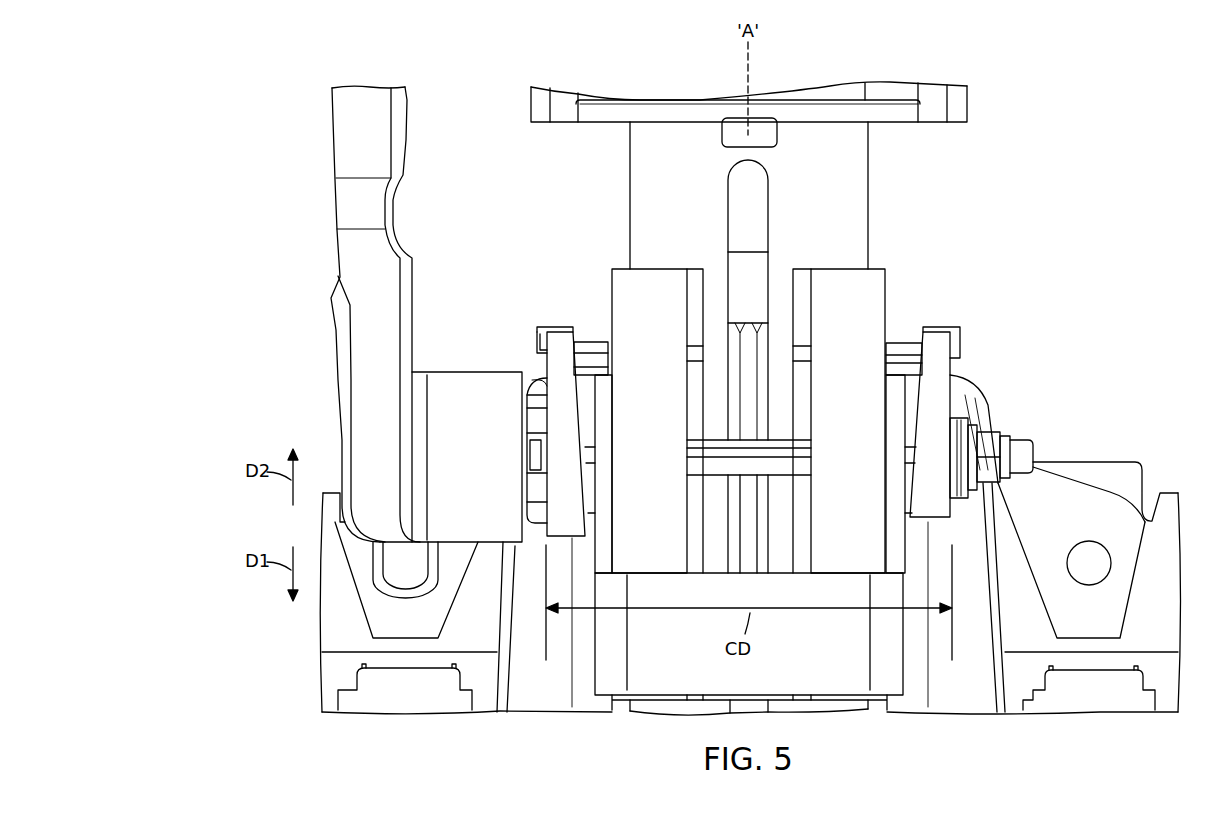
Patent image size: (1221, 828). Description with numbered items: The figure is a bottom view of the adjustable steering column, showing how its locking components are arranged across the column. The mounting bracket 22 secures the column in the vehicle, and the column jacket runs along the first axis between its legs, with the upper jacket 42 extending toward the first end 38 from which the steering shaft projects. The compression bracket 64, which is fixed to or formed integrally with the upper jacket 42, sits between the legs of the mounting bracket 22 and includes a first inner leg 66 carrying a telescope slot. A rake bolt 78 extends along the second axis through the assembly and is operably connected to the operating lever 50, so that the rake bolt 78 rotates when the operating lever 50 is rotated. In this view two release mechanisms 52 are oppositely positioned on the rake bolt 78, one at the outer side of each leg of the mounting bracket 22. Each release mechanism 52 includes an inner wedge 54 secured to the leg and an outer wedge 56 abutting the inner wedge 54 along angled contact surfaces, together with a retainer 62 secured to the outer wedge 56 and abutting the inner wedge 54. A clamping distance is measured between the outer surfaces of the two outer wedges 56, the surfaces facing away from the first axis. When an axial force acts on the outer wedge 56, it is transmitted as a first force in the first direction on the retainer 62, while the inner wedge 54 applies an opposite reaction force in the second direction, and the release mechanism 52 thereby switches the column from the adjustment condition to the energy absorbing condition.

The mounting bracket 22 is at (830, 678).
The first end 38 is at (818, 140).
The upper jacket 42 is at (857, 187).
The operating lever 50 is at (345, 122).
The release mechanism 52 is at (546, 368).
The inner wedge 54 is at (584, 358).
The outer wedge 56 is at (562, 340).
The retainer 62 is at (957, 342).
The compression bracket 64 is at (650, 278).
The first inner leg 66 is at (540, 330).
The rake bolt 78 is at (710, 447).